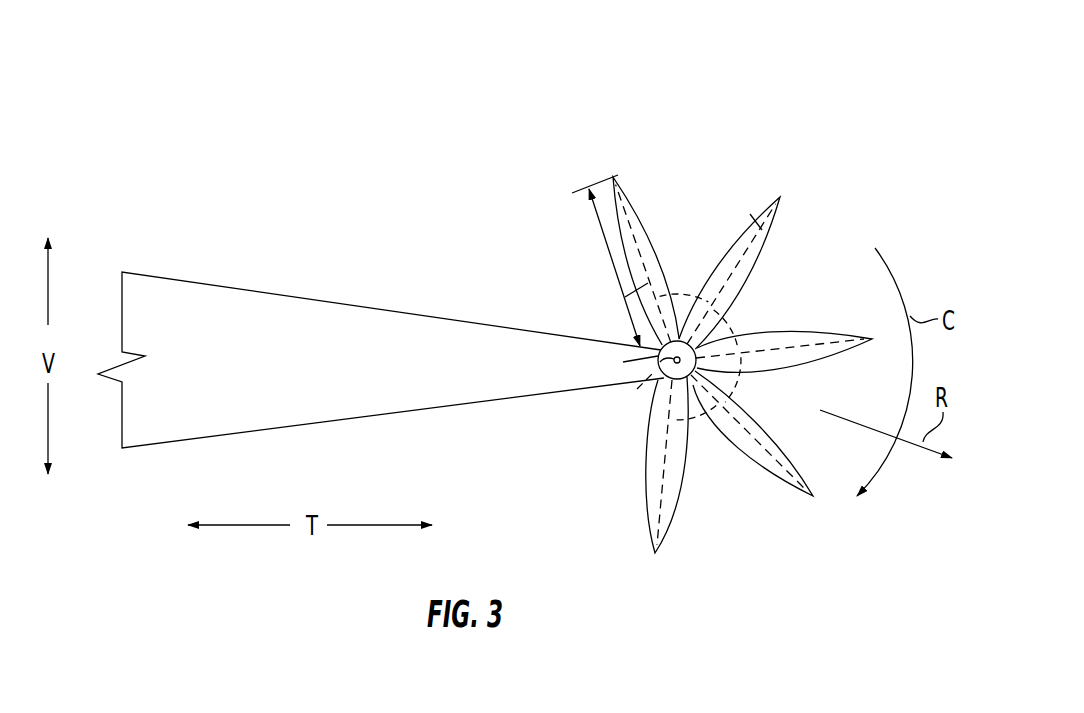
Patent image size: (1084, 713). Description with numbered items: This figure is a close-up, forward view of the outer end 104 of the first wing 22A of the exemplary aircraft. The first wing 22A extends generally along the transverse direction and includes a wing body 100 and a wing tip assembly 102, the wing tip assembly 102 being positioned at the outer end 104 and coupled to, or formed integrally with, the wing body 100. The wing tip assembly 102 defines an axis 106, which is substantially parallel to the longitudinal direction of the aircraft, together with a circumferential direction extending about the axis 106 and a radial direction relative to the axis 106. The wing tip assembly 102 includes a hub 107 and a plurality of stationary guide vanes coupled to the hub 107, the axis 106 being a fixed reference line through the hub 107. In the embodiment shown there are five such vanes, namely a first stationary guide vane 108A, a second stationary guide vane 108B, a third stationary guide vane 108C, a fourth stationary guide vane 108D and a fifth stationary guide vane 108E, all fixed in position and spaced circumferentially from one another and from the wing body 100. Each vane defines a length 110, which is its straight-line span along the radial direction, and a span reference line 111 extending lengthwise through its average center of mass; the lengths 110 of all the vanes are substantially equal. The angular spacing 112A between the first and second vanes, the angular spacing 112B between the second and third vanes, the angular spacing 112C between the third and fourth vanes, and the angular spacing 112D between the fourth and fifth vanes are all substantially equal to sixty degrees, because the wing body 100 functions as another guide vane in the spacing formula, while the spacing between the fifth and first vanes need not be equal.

The first wing 22A is at (303, 196).
The wing body 100 is at (386, 337).
The wing tip assembly 102 is at (805, 71).
The outer end 104 is at (569, 269).
The axis 106 is at (637, 389).
The hub 107 is at (660, 380).
The first stationary guide vane 108A is at (627, 200).
The second stationary guide vane 108B is at (778, 206).
The third stationary guide vane 108C is at (840, 332).
The fourth stationary guide vane 108D is at (782, 487).
The fifth stationary guide vane 108E is at (643, 492).
The length 110 is at (599, 222).
The span reference line 111 is at (618, 298).
The angular spacing 112A is at (683, 283).
The angular spacing 112B is at (745, 321).
The angular spacing 112C is at (752, 387).
The angular spacing 112D is at (697, 432).